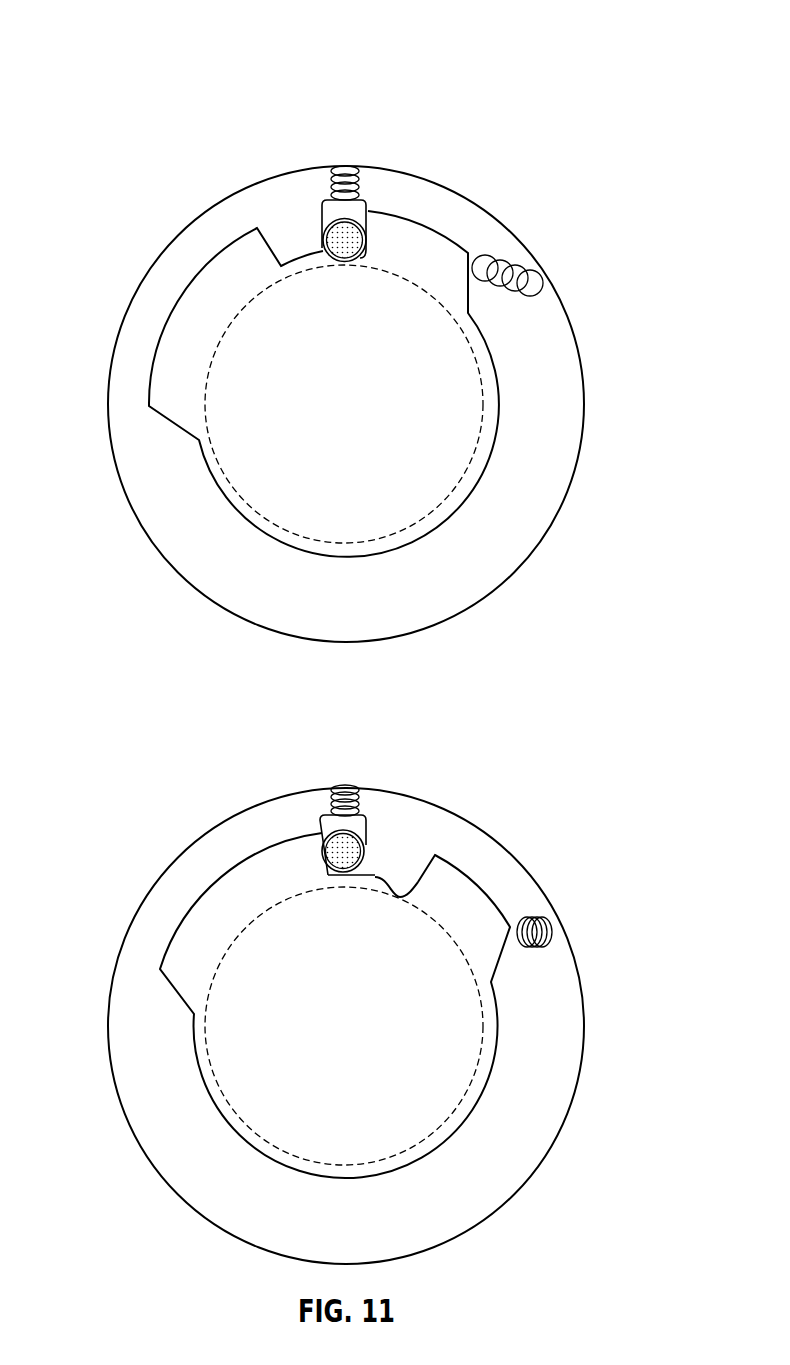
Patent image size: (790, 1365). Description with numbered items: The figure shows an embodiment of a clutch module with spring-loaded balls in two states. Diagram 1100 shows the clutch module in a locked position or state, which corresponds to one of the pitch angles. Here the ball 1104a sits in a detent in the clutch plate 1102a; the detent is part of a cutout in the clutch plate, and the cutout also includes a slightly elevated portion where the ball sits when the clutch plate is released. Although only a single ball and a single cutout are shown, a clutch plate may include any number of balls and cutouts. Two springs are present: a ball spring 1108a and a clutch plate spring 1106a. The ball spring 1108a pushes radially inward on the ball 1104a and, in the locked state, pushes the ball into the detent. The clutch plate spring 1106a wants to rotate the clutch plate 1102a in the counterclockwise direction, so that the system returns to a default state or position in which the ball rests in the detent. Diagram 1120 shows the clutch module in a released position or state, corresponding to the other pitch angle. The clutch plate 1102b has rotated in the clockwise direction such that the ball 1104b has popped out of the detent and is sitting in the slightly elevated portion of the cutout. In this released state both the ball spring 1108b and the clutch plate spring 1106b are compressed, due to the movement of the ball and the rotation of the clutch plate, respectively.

The diagram 1100 is at (622, 52).
The diagram 1120 is at (620, 702).
The clutch plate 1102a is at (178, 293).
The clutch plate 1102b is at (177, 917).
The ball 1104a is at (320, 243).
The ball 1104b is at (366, 857).
The clutch plate spring 1106a is at (523, 260).
The clutch plate spring 1106b is at (535, 917).
The ball spring 1108a is at (362, 178).
The ball spring 1108b is at (322, 793).